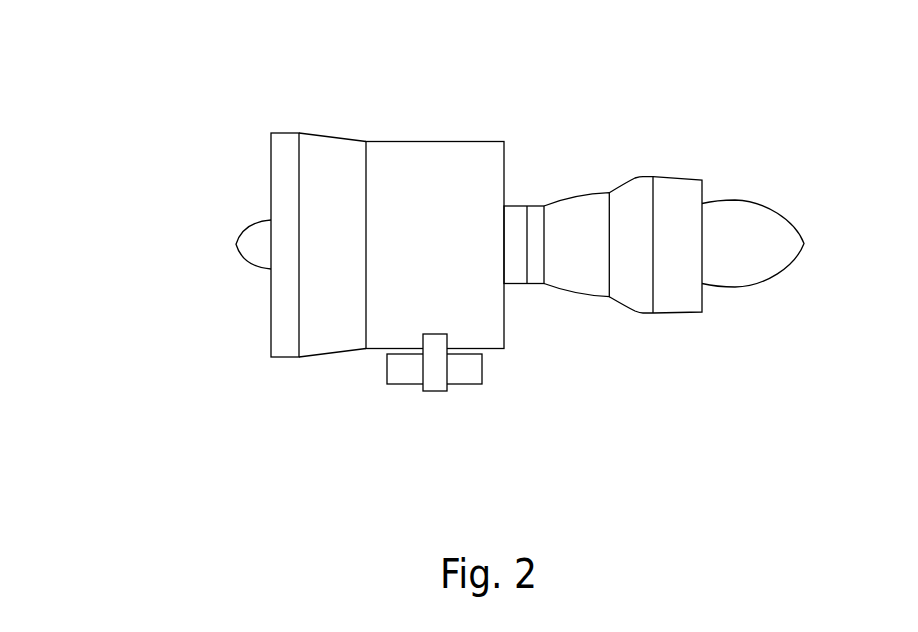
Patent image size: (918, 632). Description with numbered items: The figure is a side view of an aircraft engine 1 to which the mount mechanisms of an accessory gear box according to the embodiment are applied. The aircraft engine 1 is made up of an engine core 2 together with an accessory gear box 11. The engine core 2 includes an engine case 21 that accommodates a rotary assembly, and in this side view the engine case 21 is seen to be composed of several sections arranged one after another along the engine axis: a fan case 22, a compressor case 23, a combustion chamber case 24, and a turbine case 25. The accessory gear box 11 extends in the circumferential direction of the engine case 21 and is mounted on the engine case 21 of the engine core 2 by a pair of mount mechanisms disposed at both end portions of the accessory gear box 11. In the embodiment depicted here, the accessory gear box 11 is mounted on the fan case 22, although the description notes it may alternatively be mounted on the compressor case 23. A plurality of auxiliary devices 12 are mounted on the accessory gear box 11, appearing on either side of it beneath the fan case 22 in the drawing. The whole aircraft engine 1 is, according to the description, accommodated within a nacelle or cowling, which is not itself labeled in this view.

The aircraft engine 1 is at (636, 82).
The engine core 2 is at (744, 200).
The accessory gear box 11 is at (433, 380).
The auxiliary devices 12 is at (402, 386).
The engine case 21 is at (323, 132).
The fan case 22 is at (417, 182).
The compressor case 23 is at (515, 217).
The combustion chamber case 24 is at (575, 272).
The turbine case 25 is at (629, 286).